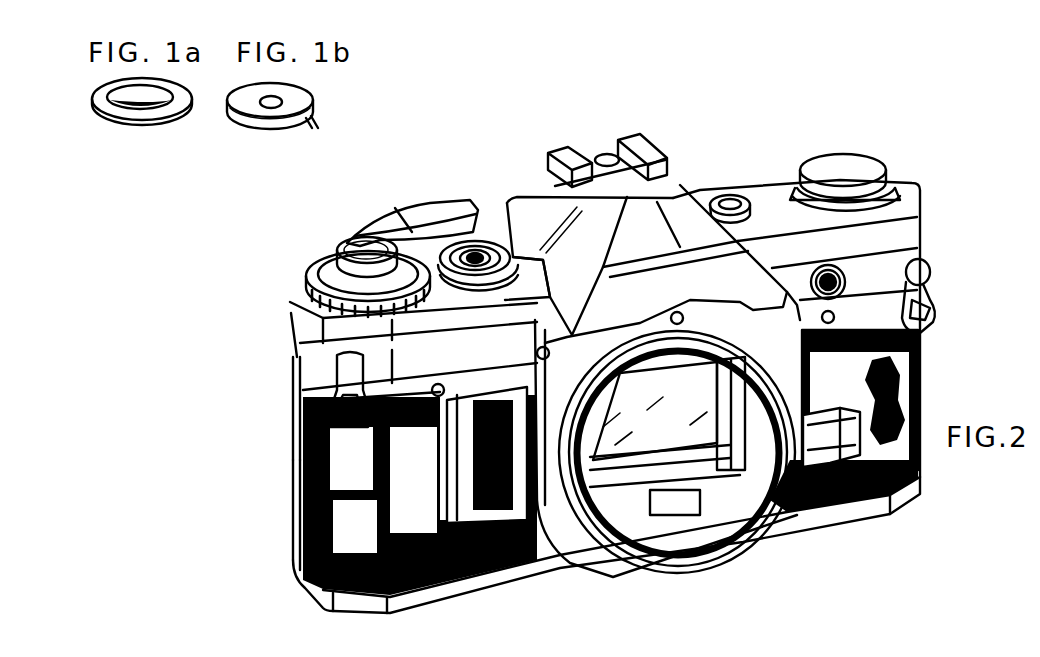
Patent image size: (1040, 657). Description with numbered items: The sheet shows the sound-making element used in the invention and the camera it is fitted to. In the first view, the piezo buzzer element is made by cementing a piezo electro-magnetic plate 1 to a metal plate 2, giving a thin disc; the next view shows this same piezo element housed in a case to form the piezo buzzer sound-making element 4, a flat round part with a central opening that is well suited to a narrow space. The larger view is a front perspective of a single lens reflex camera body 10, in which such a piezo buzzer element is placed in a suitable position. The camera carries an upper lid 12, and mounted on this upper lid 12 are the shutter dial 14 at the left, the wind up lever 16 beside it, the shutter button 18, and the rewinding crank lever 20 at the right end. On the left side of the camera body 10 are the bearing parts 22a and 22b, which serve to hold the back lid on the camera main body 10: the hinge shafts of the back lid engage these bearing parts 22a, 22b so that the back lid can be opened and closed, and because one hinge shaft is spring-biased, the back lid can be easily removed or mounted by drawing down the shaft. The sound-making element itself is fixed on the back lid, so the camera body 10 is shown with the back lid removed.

In FIG. 1A, the piezo electro-magnetic plate 1 is at (165, 96).
In FIG. 1A, the metal plate 2 is at (145, 117).
In FIG. 1B, the piezo buzzer sound-making element 4 is at (253, 113).
In FIG. 2, the camera body 10 is at (917, 380).
In FIG. 2, the upper lid 12 is at (903, 207).
In FIG. 2, the shutter dial 14 is at (306, 284).
In FIG. 2, the wind up lever 16 is at (435, 208).
In FIG. 2, the shutter button 18 is at (482, 240).
In FIG. 2, the rewinding crank lever 20 is at (867, 168).
In FIG. 2, the bearing part 22a is at (297, 363).
In FIG. 2, the bearing part 22b is at (298, 560).